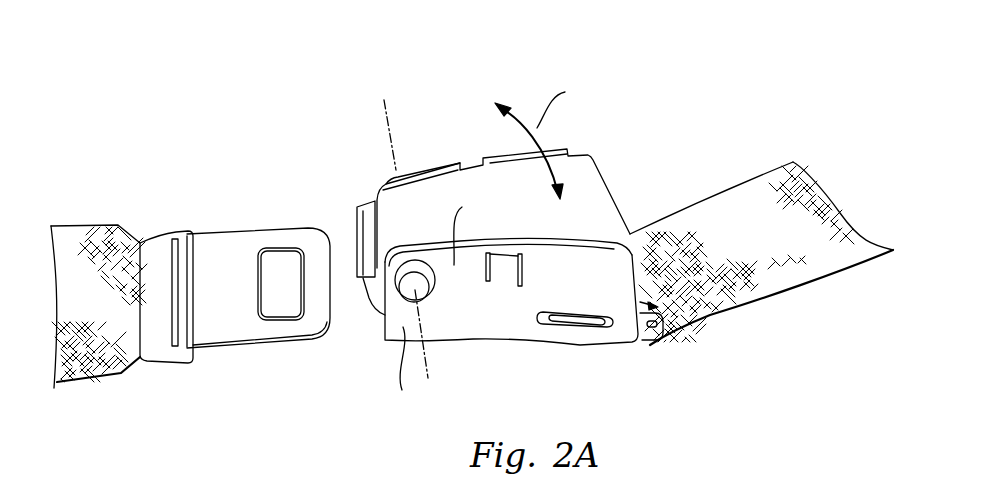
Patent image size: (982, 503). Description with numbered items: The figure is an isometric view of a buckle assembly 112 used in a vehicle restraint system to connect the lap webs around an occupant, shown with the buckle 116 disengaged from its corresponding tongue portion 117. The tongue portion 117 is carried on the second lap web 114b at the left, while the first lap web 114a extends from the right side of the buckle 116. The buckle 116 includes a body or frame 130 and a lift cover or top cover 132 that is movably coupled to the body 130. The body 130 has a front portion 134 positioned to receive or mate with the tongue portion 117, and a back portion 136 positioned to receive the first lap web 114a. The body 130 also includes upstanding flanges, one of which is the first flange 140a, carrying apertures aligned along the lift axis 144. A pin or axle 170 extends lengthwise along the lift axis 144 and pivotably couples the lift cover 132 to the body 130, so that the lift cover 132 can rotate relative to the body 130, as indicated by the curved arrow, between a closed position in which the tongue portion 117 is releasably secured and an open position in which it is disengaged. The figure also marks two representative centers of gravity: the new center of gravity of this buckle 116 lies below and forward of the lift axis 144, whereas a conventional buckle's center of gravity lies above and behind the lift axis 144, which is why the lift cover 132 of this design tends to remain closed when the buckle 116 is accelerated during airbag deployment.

The buckle assembly 112 is at (734, 73).
The first lap web 114a is at (793, 163).
The second lap web 114b is at (120, 373).
The buckle 116 is at (602, 136).
The tongue portion 117 is at (225, 335).
The body 130 is at (518, 339).
The lift cover 132 is at (592, 190).
The front portion 134 is at (376, 325).
The back portion 136 is at (690, 333).
The first flange 140a is at (613, 303).
The lift axis 144 is at (388, 118).
The pin 170 is at (418, 290).